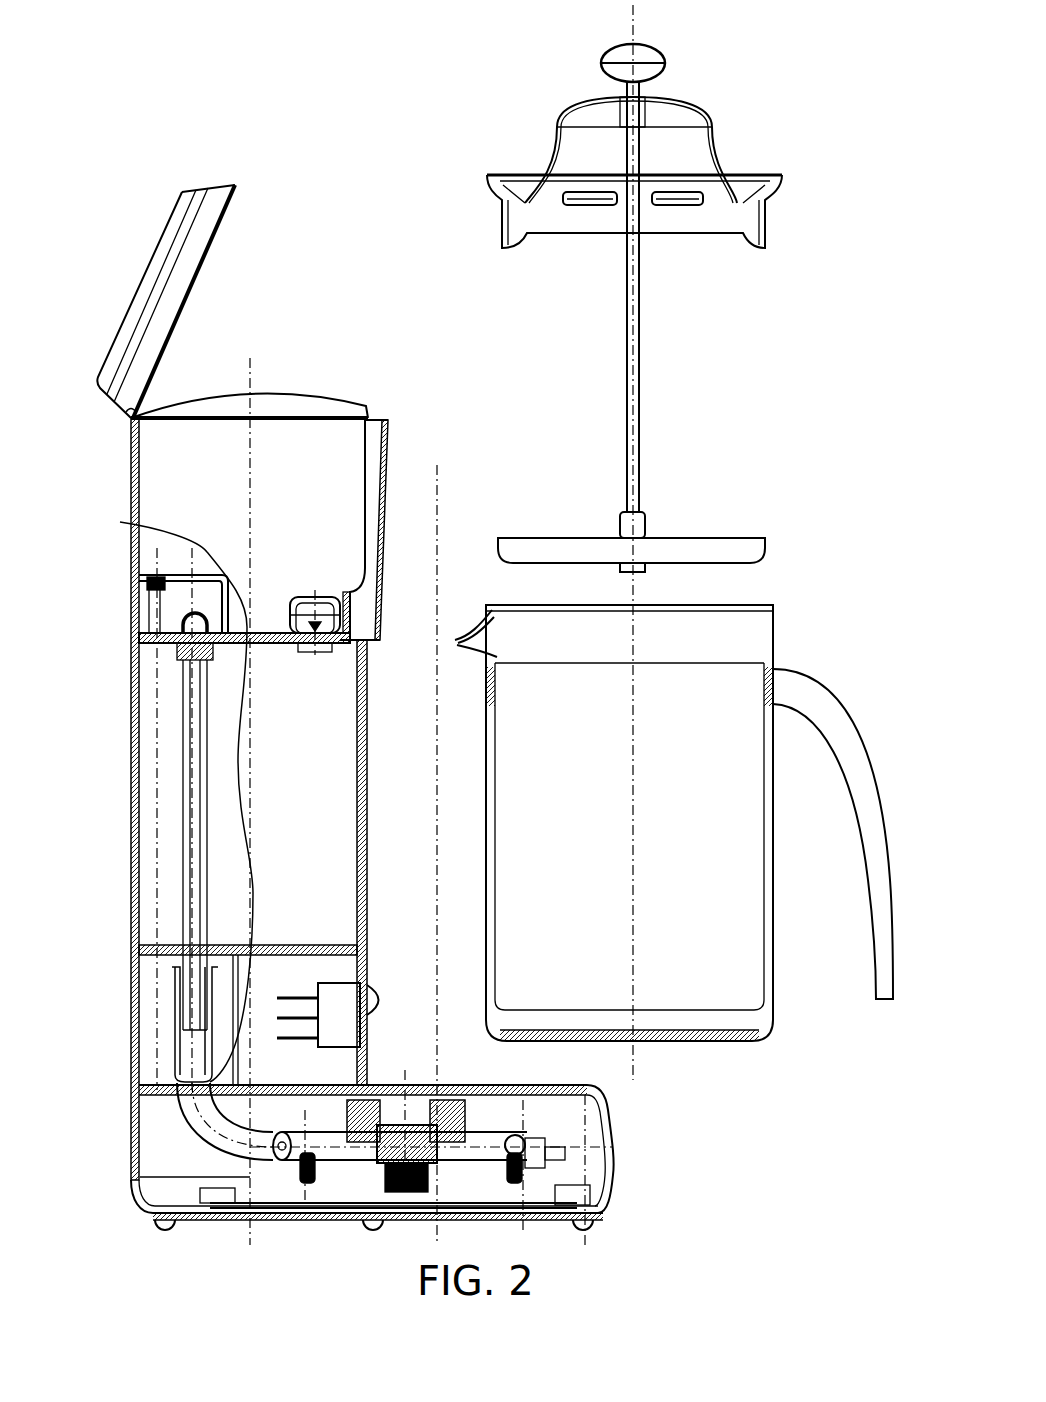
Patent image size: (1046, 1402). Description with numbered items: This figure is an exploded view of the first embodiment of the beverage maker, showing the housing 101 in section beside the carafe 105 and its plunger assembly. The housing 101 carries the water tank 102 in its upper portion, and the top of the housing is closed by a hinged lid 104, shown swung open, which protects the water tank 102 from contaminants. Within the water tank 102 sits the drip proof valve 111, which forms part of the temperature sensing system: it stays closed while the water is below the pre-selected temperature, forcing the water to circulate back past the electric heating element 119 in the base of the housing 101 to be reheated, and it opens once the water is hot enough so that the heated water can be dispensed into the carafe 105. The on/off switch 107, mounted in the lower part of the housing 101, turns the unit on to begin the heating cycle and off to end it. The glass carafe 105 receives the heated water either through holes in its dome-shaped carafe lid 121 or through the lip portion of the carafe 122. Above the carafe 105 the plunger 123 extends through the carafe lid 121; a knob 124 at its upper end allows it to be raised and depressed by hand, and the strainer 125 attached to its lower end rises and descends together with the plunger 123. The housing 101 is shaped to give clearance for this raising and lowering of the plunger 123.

The housing 101 is at (131, 780).
The water tank 102 is at (203, 510).
The hinged lid 104 is at (128, 305).
The carafe 105 is at (716, 706).
The on/off switch 107 is at (327, 990).
The drip proof valve 111 is at (287, 612).
The electric heating element 119 is at (383, 1186).
The carafe lid 121 is at (667, 150).
The lip portion of the carafe 122 is at (455, 650).
The plunger 123 is at (645, 396).
The knob 124 is at (666, 47).
The strainer 125 is at (547, 537).